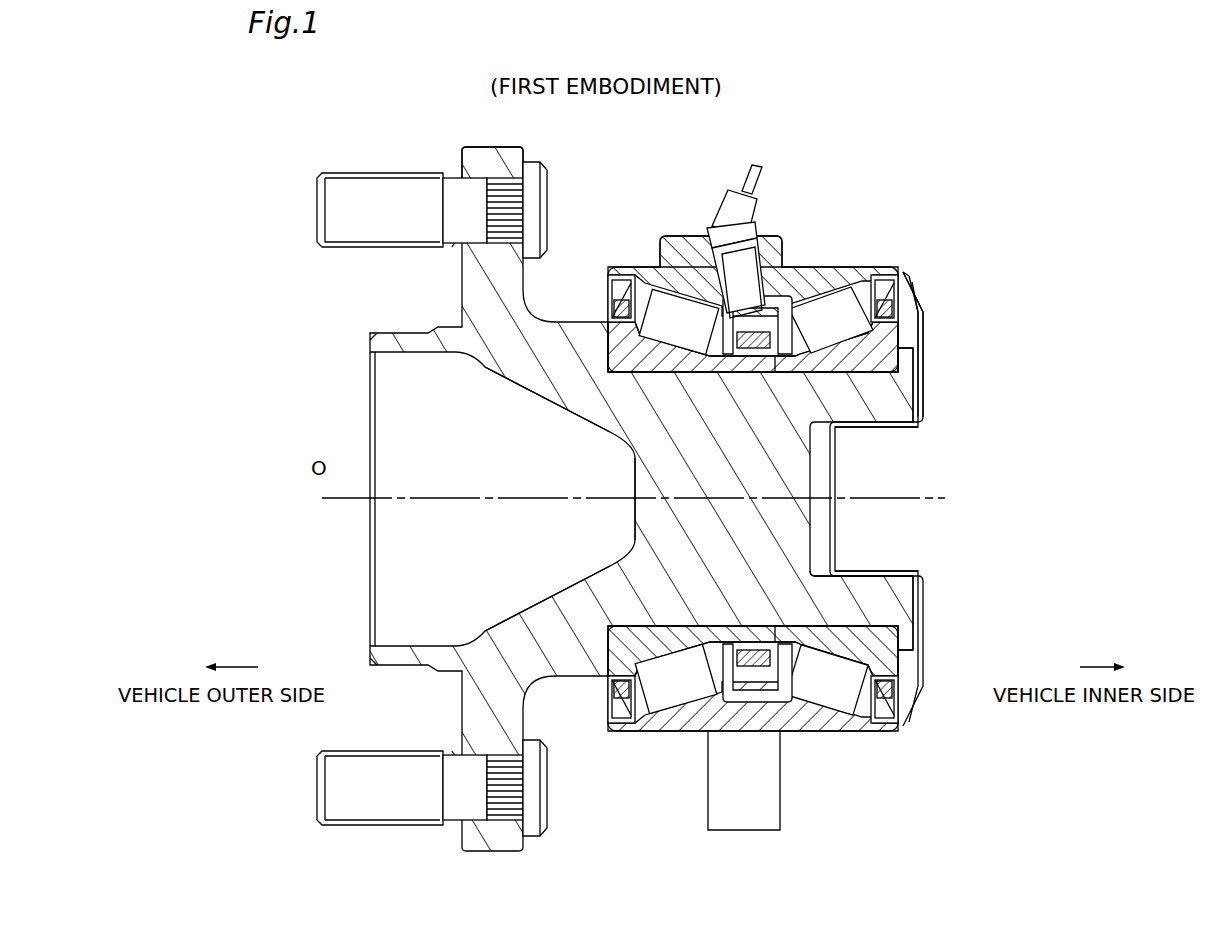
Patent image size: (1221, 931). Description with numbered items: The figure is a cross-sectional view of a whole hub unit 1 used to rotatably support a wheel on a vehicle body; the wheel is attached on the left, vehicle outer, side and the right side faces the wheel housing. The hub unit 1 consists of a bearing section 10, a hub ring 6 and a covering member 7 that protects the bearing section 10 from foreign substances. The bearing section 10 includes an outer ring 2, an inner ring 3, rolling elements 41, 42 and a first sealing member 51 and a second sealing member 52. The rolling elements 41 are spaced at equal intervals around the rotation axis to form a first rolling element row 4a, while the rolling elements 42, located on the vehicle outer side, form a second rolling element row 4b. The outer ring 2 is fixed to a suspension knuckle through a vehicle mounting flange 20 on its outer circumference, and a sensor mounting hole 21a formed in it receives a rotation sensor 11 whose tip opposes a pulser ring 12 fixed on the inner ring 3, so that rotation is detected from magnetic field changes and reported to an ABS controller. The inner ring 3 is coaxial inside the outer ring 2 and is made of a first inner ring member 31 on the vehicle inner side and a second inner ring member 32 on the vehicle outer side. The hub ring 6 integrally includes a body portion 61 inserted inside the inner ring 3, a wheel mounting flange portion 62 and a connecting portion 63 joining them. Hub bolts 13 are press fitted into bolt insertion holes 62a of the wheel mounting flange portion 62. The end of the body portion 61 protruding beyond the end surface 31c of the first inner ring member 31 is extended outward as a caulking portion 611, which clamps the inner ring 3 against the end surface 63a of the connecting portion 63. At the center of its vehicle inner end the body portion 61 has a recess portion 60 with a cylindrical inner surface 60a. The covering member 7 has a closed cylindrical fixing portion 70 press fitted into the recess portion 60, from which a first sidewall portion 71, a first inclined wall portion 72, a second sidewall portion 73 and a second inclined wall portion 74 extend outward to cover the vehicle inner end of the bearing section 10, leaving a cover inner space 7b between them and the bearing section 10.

The hub unit 1 is at (318, 153).
The outer ring 2 is at (682, 262).
The inner ring 3 is at (575, 440).
The first rolling element row 4a is at (819, 720).
The second rolling element row 4b is at (675, 720).
The hub ring 6 is at (352, 311).
The covering member 7 is at (934, 380).
The cover inner space 7b is at (916, 302).
The bearing section 10 is at (916, 254).
The rotation sensor 11 is at (770, 300).
The pulser ring 12 is at (784, 326).
The hub bolt 13 is at (400, 196).
The vehicle mounting flange 20 is at (752, 826).
The sensor mounting hole 21a is at (753, 285).
The first inner ring member 31 is at (850, 367).
The end surface 31c is at (903, 694).
The second inner ring member 32 is at (685, 372).
The rolling elements 41 is at (836, 308).
The rolling elements 42 is at (668, 312).
The first sealing member 51 is at (887, 290).
The second sealing member 52 is at (624, 284).
The recess portion 60 is at (905, 488).
The cylindrical inner surface 60a is at (866, 570).
The body portion 61 is at (668, 516).
The caulking portion 611 is at (909, 374).
The wheel mounting flange portion 62 is at (474, 158).
The bolt insertion hole 62a is at (458, 242).
The connecting portion 63 is at (552, 368).
The end surface 63a is at (607, 316).
The fixing portion 70 is at (870, 428).
The first sidewall portion 71 is at (925, 348).
The first inclined wall portion 72 is at (925, 333).
The second sidewall portion 73 is at (925, 318).
The second inclined wall portion 74 is at (914, 282).